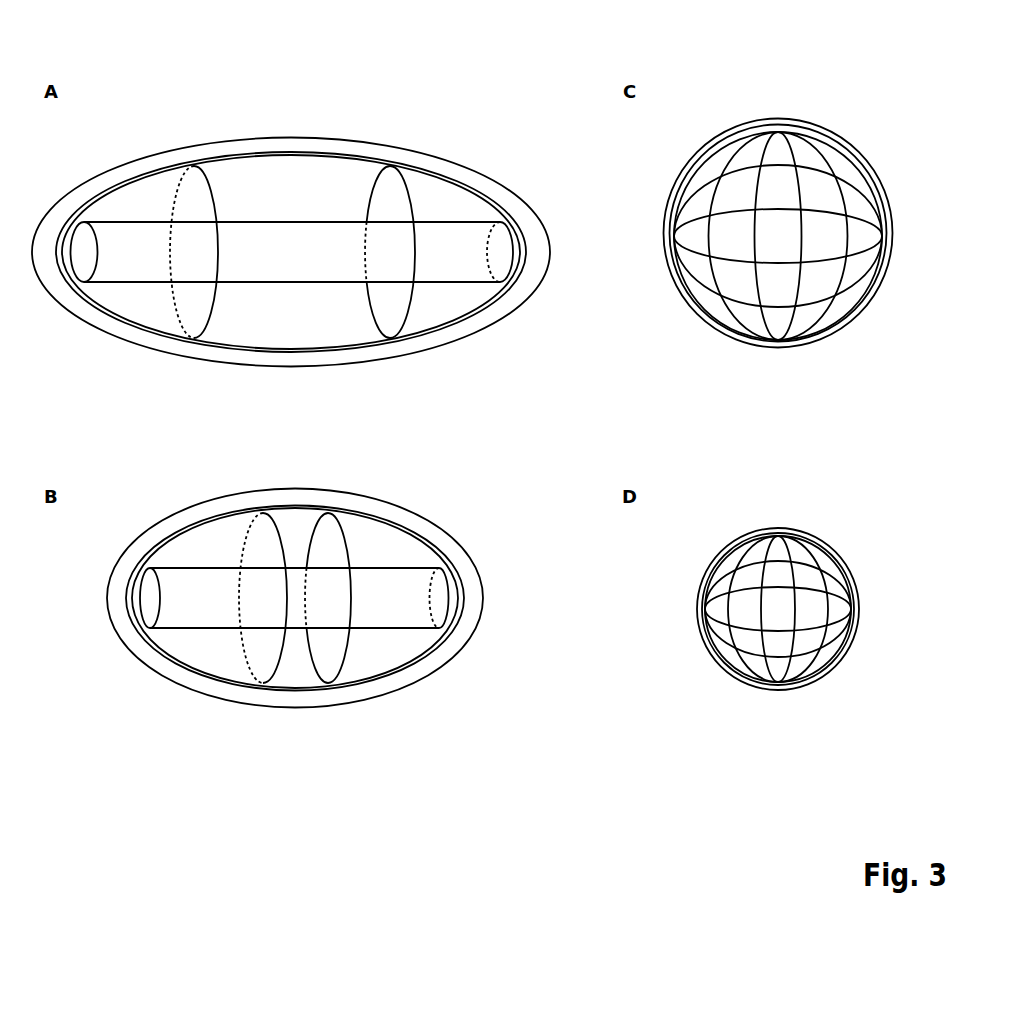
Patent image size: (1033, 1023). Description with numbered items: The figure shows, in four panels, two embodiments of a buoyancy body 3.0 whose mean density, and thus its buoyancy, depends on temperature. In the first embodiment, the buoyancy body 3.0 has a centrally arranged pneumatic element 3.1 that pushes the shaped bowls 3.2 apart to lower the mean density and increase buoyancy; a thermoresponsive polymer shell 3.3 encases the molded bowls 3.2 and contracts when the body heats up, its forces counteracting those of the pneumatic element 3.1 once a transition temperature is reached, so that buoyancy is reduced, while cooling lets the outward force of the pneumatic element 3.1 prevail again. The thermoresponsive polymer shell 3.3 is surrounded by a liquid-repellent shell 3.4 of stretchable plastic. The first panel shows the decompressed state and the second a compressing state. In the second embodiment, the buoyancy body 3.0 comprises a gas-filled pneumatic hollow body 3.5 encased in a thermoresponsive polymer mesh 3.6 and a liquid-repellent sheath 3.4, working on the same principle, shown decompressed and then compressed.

The buoyancy body 3.0 is at (235, 123).
The pneumatic element 3.1 is at (292, 253).
The shaped bowls 3.2 is at (425, 212).
The thermoresponsive polymer shell 3.3 is at (363, 348).
The liquid-repellent shell 3.4 is at (492, 327).
The gas-filled pneumatic hollow body 3.5 is at (778, 233).
The thermoresponsive polymer mesh 3.6 is at (760, 292).